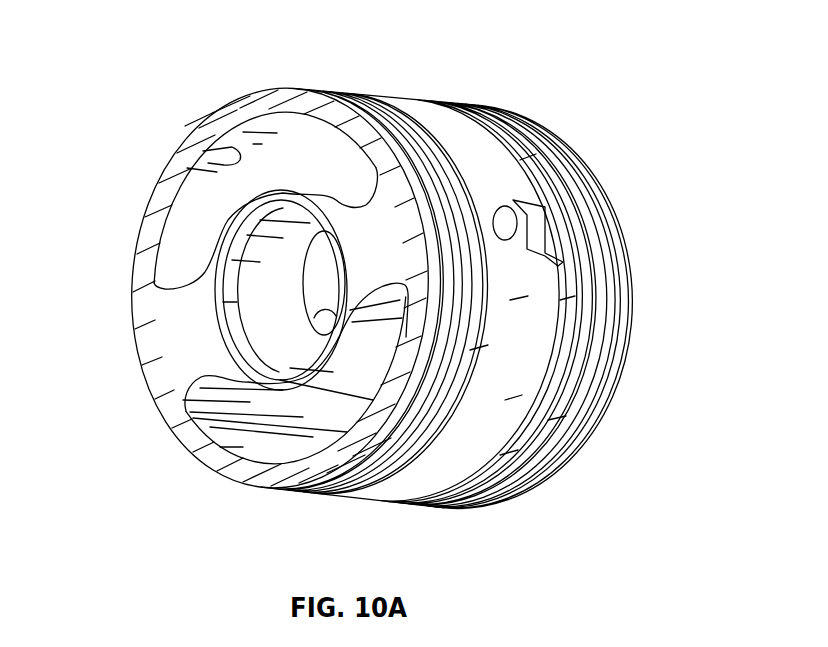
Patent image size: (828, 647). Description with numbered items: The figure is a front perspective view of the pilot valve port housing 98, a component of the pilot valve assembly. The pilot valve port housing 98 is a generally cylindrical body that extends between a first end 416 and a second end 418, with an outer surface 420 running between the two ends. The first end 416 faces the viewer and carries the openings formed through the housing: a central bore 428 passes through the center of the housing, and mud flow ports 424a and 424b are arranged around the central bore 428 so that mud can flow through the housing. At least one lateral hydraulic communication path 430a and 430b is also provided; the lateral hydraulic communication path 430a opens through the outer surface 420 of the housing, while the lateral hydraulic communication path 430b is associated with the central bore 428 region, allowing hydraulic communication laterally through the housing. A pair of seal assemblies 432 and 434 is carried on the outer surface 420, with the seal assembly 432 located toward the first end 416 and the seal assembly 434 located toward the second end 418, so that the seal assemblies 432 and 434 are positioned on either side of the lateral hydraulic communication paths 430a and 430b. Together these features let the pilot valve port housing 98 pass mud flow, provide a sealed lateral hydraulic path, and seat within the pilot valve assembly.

The pilot valve port housing 98 is at (427, 72).
The first end 416 is at (131, 327).
The second end 418 is at (600, 420).
The outer surface 420 is at (384, 498).
The mud flow port 424a is at (203, 151).
The mud flow port 424b is at (235, 432).
The central bore 428 is at (263, 326).
The lateral hydraulic communication path 430a is at (502, 225).
The lateral hydraulic communication path 430b is at (323, 313).
The seal assembly 432 is at (317, 494).
The seal assembly 434 is at (535, 465).